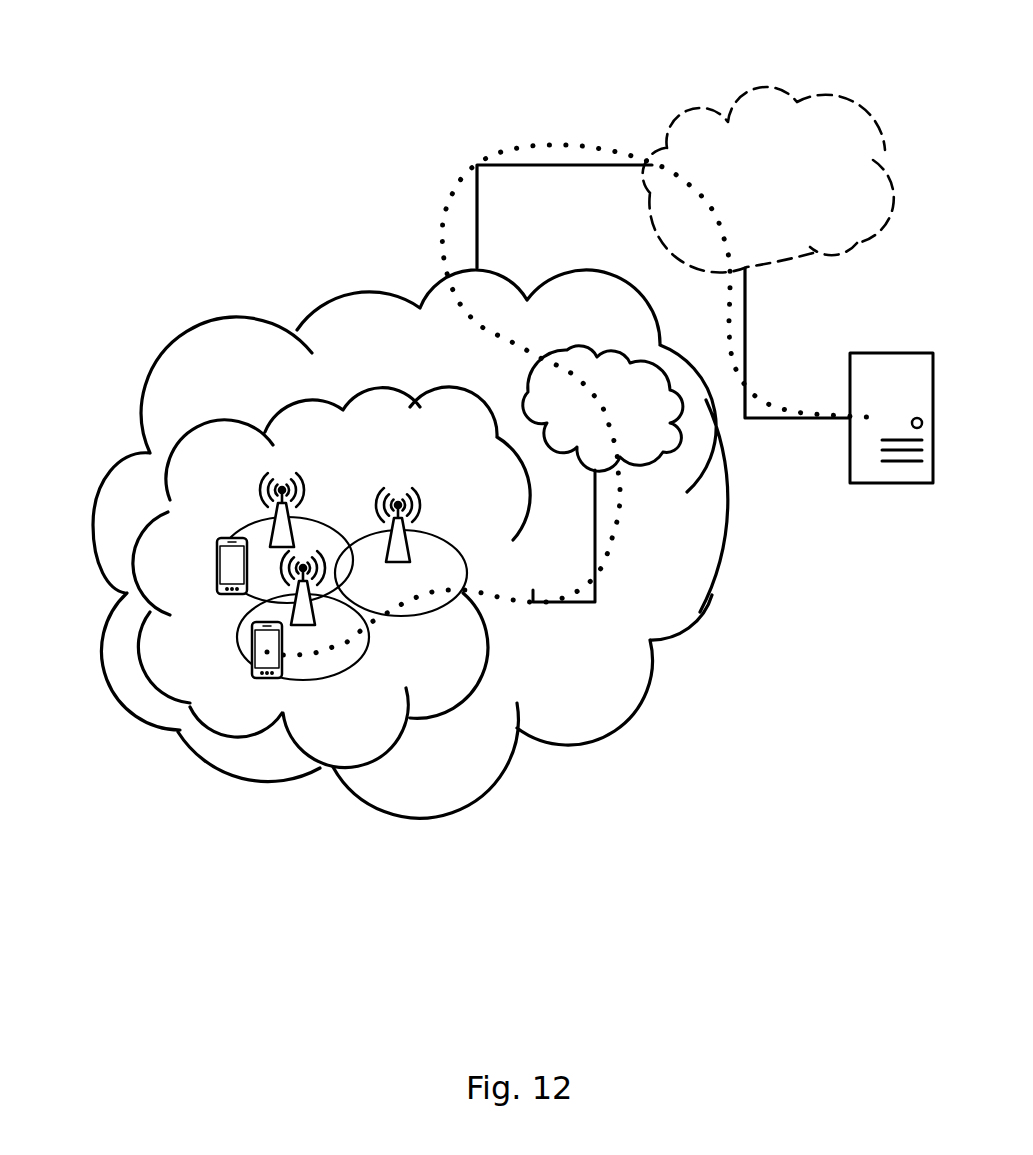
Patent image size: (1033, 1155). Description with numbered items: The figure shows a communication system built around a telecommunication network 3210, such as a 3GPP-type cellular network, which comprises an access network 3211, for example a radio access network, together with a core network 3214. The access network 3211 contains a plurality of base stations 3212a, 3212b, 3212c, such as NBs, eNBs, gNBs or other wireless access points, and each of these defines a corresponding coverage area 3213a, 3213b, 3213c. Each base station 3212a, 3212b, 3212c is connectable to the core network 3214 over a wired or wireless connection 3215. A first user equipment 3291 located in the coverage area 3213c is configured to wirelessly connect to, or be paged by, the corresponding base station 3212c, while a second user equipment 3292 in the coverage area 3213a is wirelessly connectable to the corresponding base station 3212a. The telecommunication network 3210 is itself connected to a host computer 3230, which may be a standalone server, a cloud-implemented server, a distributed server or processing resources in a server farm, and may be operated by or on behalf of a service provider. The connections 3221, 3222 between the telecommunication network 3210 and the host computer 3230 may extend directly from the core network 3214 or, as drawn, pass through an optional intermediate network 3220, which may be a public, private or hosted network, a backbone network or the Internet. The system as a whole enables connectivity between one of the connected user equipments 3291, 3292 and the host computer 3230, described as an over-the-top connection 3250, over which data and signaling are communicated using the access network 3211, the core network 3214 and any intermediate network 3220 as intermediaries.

The telecommunication network 3210 is at (442, 351).
The access network 3211 is at (396, 456).
The base station 3212a is at (310, 618).
The base station 3212b is at (425, 506).
The base station 3212c is at (258, 493).
The coverage area 3213a is at (330, 600).
The coverage area 3213b is at (467, 573).
The coverage area 3213c is at (250, 545).
The core network 3214 is at (671, 417).
The wired or wireless connection 3215 is at (600, 515).
The intermediate network 3220 is at (804, 187).
The connection 3221 is at (557, 166).
The connection 3222 is at (797, 419).
The host computer 3230 is at (891, 438).
The over-the-top (OTT) connection 3250 is at (452, 192).
The first user equipment (UE) 3291 is at (217, 594).
The second UE 3292 is at (248, 674).